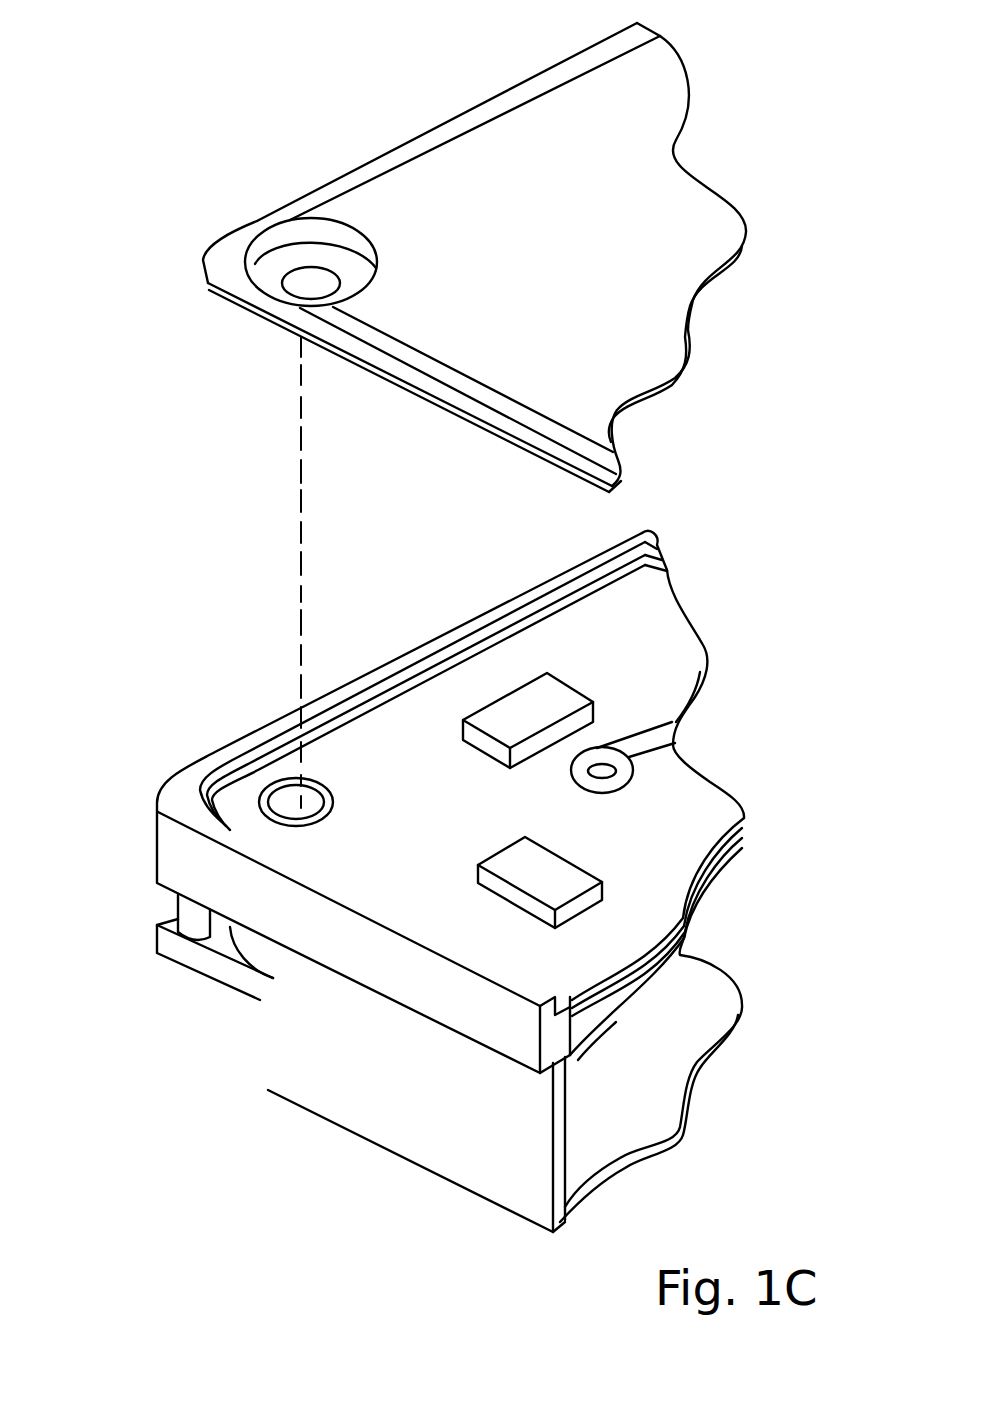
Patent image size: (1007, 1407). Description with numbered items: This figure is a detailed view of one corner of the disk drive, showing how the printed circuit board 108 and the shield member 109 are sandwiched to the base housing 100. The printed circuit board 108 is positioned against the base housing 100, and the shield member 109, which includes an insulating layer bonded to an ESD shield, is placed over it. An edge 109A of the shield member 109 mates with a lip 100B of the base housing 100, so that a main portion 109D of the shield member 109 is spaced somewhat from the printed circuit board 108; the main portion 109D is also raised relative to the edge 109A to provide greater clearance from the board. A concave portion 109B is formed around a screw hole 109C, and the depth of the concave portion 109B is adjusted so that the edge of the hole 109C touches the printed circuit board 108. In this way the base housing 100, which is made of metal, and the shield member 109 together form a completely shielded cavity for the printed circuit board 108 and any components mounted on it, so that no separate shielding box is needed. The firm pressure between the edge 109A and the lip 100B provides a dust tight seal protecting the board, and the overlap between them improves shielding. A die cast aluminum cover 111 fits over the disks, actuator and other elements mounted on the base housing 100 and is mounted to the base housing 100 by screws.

The base housing 100 is at (172, 852).
The lip 100B is at (658, 540).
The printed circuit board 108 is at (680, 953).
The shield member 109 is at (680, 166).
The edge of shield member 109A is at (556, 63).
The concave portion 109B is at (290, 247).
The screw hole 109C is at (309, 276).
The main portion of shield member 109D is at (650, 343).
The die cast aluminum cover 111 is at (313, 1073).